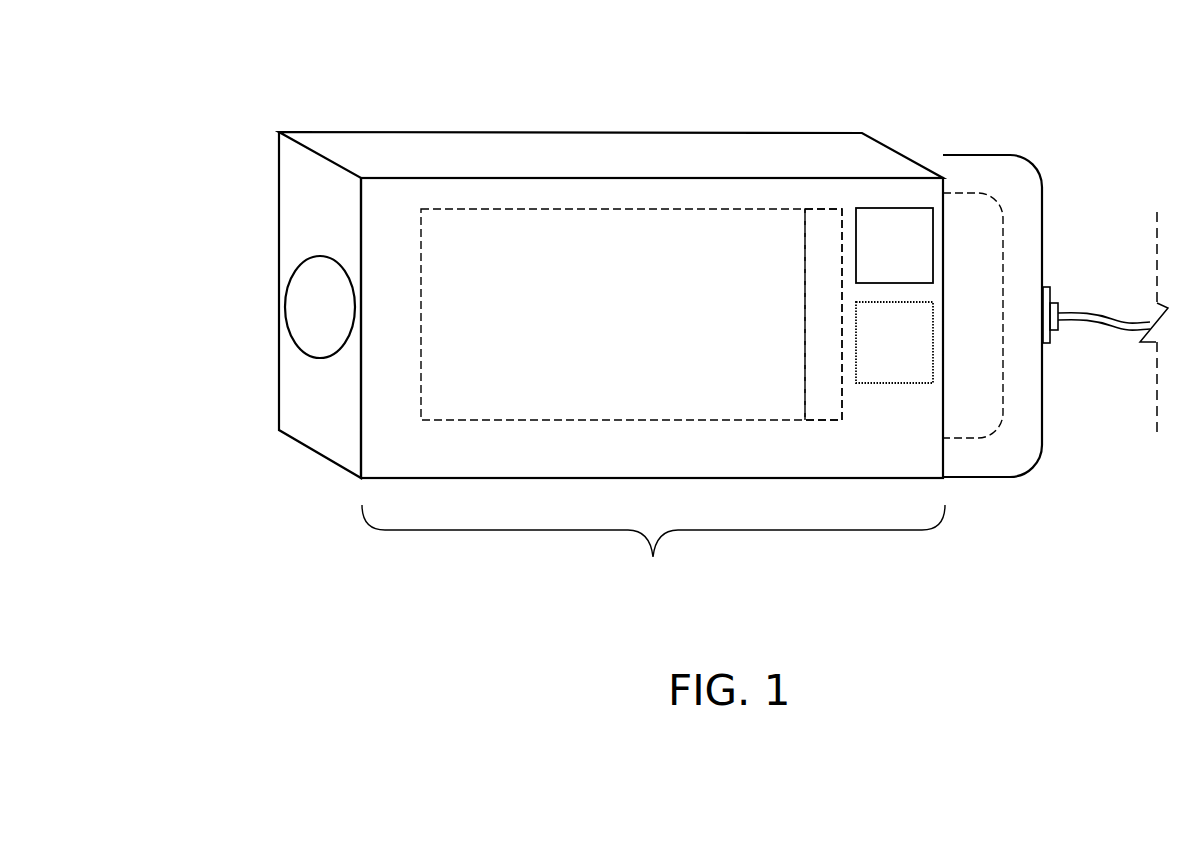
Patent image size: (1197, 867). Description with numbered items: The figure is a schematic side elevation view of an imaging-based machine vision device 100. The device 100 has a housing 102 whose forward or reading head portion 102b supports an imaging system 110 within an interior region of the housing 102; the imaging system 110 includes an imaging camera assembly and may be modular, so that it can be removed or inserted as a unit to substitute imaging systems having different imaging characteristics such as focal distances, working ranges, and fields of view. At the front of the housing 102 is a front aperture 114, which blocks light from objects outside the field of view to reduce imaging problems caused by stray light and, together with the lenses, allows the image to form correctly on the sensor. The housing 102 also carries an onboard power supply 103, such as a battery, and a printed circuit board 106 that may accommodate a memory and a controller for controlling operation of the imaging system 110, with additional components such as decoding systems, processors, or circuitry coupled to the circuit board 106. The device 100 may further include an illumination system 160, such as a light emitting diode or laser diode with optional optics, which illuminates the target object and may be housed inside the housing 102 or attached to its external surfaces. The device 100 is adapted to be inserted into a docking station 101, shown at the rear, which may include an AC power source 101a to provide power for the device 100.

The machine vision device 100 is at (279, 68).
The docking station 101 is at (1031, 163).
The AC power source 101a is at (1105, 315).
The housing 102 is at (893, 148).
The reading head portion 102b is at (653, 546).
The onboard power supply 103 is at (922, 256).
The printed circuit board 106 is at (822, 217).
The imaging system 110 is at (630, 421).
The front aperture 114 is at (293, 302).
The illumination system 160 is at (925, 354).